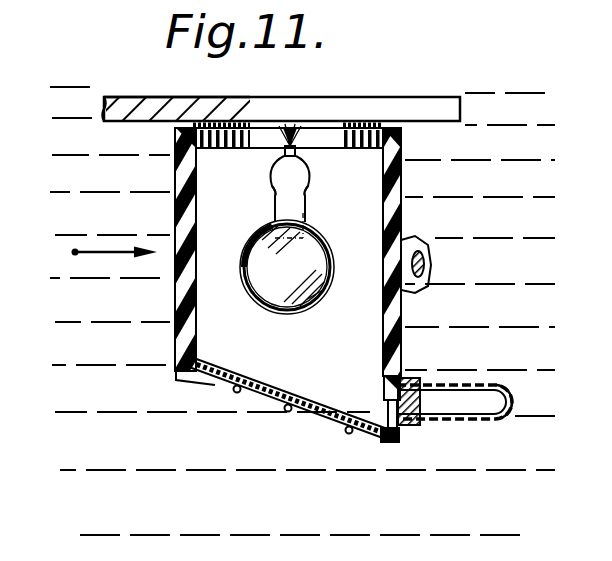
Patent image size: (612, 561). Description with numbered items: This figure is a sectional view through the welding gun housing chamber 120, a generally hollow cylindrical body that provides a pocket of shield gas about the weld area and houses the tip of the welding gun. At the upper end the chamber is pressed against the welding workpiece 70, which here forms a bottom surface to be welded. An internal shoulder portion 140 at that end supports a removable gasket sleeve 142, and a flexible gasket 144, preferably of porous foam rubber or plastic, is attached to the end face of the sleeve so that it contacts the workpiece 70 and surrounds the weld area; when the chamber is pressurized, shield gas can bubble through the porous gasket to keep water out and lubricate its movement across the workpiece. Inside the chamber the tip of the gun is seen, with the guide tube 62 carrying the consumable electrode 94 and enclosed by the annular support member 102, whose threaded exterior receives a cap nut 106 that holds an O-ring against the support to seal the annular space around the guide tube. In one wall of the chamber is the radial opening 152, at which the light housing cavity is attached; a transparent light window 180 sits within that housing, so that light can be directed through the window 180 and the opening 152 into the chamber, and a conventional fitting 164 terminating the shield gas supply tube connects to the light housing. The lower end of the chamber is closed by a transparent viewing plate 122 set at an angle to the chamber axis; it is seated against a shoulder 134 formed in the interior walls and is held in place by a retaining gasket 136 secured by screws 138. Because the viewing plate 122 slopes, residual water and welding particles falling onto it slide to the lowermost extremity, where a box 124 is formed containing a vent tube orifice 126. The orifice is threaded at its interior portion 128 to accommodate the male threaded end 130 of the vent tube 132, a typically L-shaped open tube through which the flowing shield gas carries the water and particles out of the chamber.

The welding workpiece 70 is at (381, 112).
The flexible gasket 144 is at (203, 122).
The gasket sleeve 142 is at (255, 122).
The internal shoulder portion 140 is at (362, 127).
The housing chamber 120 is at (177, 197).
The guide tube 62 is at (299, 154).
The consumable electrode 94 is at (283, 155).
The cap nut 106 is at (313, 184).
The annular support member 102 is at (300, 208).
The radial opening 152 is at (318, 293).
The transparent light window 180 is at (263, 270).
The fitting 164 is at (430, 258).
The shoulder 134 is at (197, 357).
The screws 138 is at (176, 373).
The transparent viewing plate 122 is at (258, 376).
The retaining gasket 136 is at (307, 417).
The vent tube orifice 126 is at (380, 400).
The box 124 is at (405, 437).
The threaded interior portion 128 is at (406, 378).
The male threaded end 130 is at (435, 387).
The vent tube 132 is at (500, 417).